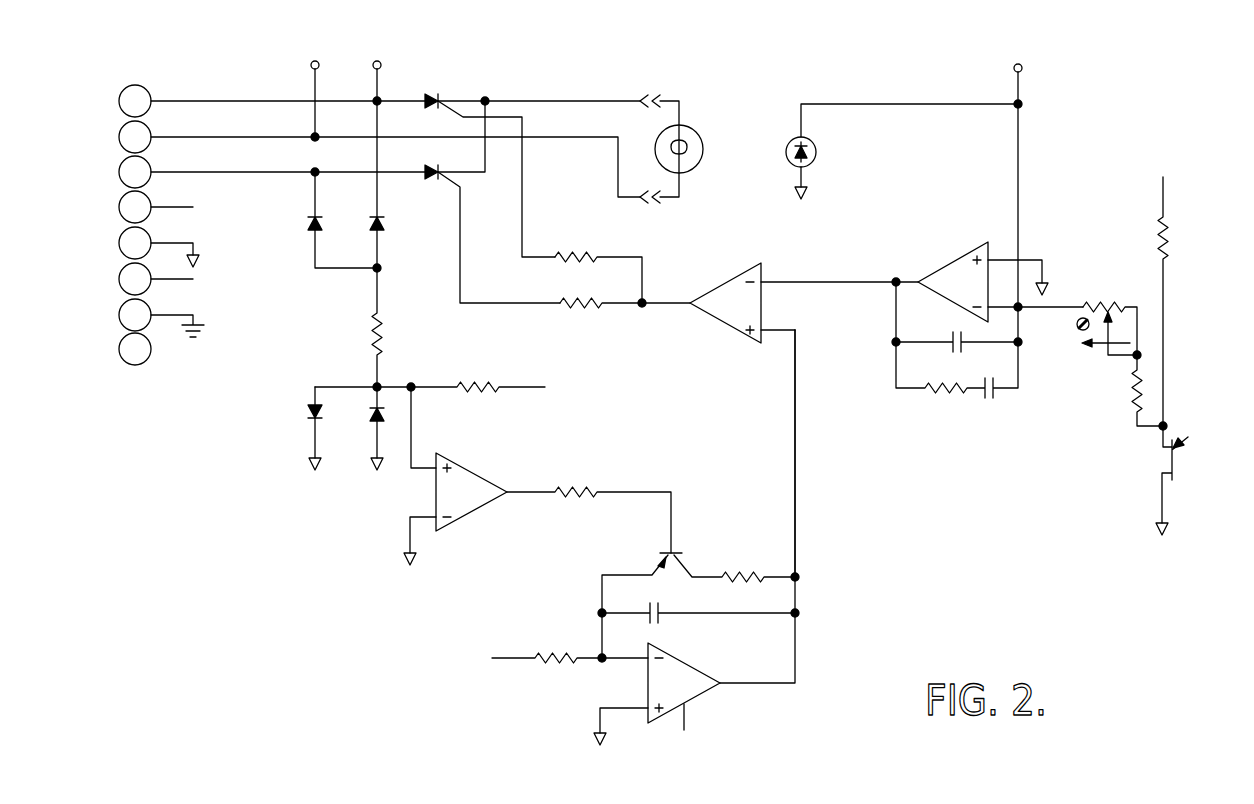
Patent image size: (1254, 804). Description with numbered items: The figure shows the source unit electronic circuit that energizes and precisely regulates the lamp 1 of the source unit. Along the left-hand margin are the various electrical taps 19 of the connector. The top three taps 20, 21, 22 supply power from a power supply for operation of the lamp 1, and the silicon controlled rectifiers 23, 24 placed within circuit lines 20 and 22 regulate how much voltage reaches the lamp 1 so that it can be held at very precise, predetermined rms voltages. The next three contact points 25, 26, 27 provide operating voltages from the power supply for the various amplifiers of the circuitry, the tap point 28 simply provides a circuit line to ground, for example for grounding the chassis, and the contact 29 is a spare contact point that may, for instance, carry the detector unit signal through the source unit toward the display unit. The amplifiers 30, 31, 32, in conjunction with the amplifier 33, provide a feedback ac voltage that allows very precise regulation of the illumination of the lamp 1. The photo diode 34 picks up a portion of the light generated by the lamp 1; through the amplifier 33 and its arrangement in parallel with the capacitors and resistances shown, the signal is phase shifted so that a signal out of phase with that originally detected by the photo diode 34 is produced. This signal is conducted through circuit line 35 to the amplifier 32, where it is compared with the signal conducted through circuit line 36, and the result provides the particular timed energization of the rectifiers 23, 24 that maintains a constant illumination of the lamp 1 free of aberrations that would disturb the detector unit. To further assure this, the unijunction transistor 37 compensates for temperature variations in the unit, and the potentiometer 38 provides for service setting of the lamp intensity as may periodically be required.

The lamp 1 is at (700, 132).
The electrical taps 19 is at (136, 80).
The circuit line 20 is at (119, 93).
The tap 21 is at (120, 130).
The circuit line 22 is at (120, 165).
The silicon controlled rectifier 23 is at (440, 94).
The silicon controlled rectifier 24 is at (438, 182).
The contact point 25 is at (119, 200).
The contact point 26 is at (119, 235).
The contact point 27 is at (119, 280).
The tap point 28 is at (119, 306).
The spare contact point 29 is at (119, 349).
The amplifier 30 is at (488, 480).
The amplifier 31 is at (688, 664).
The amplifier 32 is at (730, 333).
The amplifier 33 is at (958, 258).
The photo diode 34 is at (816, 149).
The circuit line 35 is at (817, 281).
The circuit line 36 is at (797, 478).
The unijunction transistor 37 is at (1180, 466).
The potentiometer 38 is at (1138, 264).